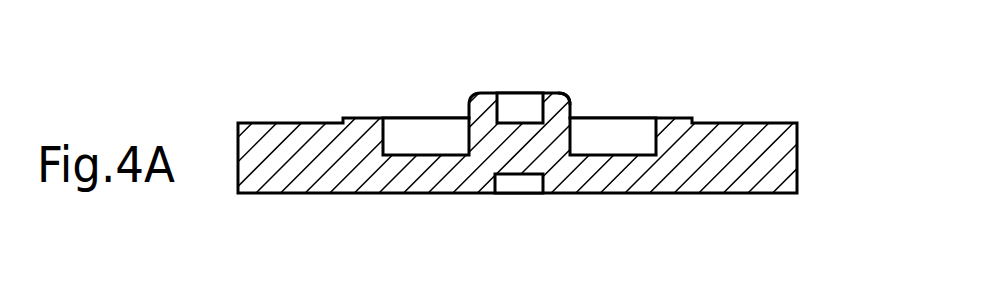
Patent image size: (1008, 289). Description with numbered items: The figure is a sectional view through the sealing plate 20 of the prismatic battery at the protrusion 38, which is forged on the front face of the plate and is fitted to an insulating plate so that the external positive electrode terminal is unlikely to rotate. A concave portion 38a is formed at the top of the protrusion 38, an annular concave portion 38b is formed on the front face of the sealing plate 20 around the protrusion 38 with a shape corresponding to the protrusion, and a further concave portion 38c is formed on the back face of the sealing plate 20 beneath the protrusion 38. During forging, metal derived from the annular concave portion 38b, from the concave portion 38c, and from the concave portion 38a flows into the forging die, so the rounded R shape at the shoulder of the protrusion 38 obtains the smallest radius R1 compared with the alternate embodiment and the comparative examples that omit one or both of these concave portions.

The sealing plate 20 is at (767, 157).
The protrusion 38 is at (504, 138).
The concave portion 38a is at (502, 94).
The annular concave portion 38b is at (413, 136).
The concave portion 38c is at (531, 185).
The radius of the R shape R1 is at (576, 94).